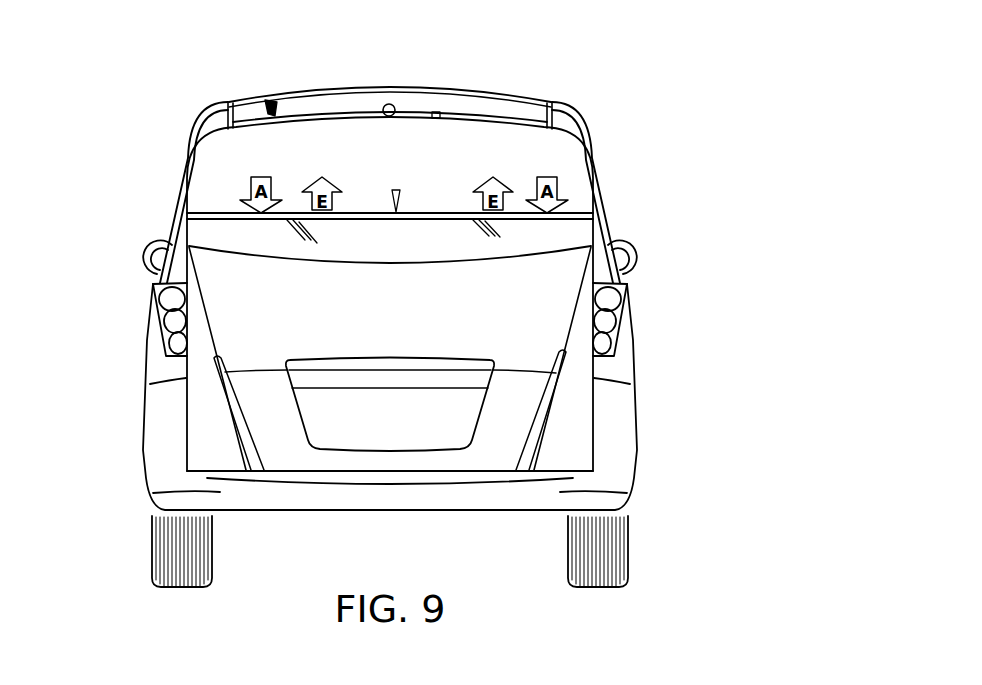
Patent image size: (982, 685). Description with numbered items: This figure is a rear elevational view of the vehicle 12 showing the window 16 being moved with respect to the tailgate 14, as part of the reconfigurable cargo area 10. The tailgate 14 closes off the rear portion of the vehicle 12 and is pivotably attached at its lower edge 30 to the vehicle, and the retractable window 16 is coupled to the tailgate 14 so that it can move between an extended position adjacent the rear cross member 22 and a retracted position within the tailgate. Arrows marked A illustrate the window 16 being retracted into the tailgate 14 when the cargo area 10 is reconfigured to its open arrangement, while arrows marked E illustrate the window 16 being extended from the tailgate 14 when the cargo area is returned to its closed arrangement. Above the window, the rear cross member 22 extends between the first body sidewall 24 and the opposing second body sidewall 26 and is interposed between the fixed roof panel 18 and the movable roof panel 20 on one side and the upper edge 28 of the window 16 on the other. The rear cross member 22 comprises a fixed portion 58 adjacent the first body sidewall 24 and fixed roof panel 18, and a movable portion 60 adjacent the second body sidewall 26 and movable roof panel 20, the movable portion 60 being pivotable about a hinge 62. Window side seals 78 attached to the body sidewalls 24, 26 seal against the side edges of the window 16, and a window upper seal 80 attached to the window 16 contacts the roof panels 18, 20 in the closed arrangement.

The reconfigurable cargo area 10 is at (677, 488).
The vehicle 12 is at (137, 115).
The tailgate 14 is at (568, 350).
The retractable window 16 is at (582, 233).
The fixed roof panel 18 is at (330, 88).
The movable roof panel 20 is at (472, 89).
The rear cross member 22 is at (268, 99).
The first body sidewall 24 is at (184, 163).
The second body sidewall 26 is at (593, 132).
The upper edge 28 is at (395, 189).
The lower edge 30 is at (279, 478).
The fixed portion 58 is at (303, 110).
The movable portion 60 is at (518, 110).
The hinge 62 is at (389, 104).
The window side seals 78 is at (435, 112).
The window upper seal 80 is at (595, 213).